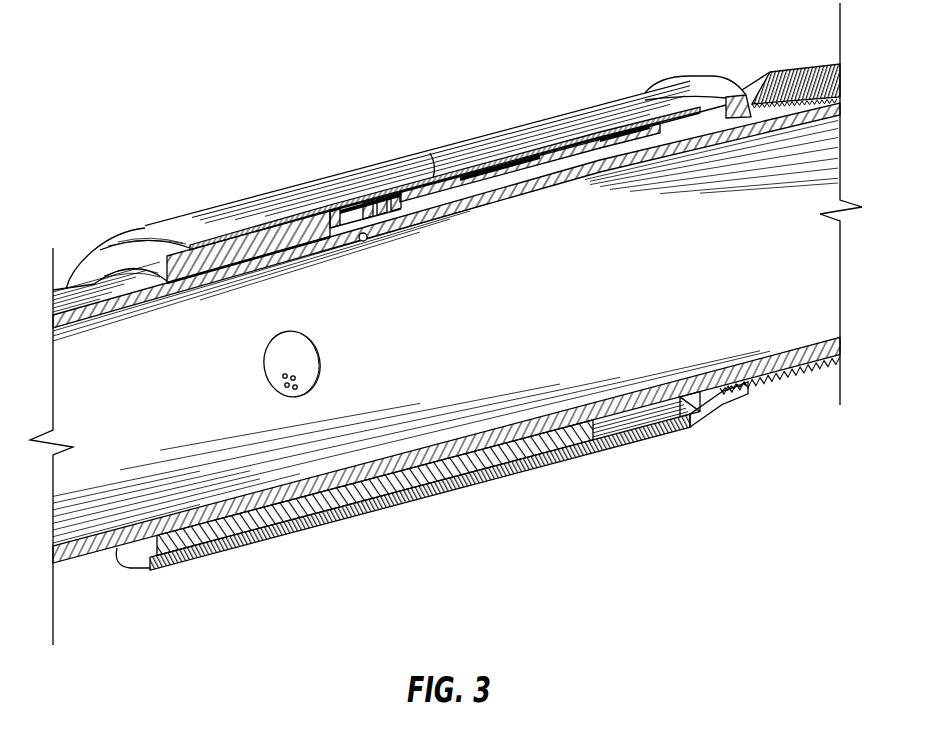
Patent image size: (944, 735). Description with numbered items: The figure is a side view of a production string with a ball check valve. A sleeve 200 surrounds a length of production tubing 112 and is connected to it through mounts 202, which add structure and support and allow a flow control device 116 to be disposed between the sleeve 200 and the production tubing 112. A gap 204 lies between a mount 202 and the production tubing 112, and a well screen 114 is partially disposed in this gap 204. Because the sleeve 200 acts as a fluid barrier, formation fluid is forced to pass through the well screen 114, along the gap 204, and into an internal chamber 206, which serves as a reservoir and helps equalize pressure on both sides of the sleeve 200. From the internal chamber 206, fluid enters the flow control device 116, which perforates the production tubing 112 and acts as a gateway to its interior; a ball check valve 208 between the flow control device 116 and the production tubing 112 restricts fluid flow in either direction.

The production tubing 112 is at (85, 552).
The well screen 114 is at (785, 371).
The flow control device 116 is at (466, 192).
The sleeve 200 is at (433, 174).
The mount 202 is at (141, 241).
The gap 204 is at (743, 128).
The internal chamber 206 is at (689, 129).
The ball check valve 208 is at (372, 251).